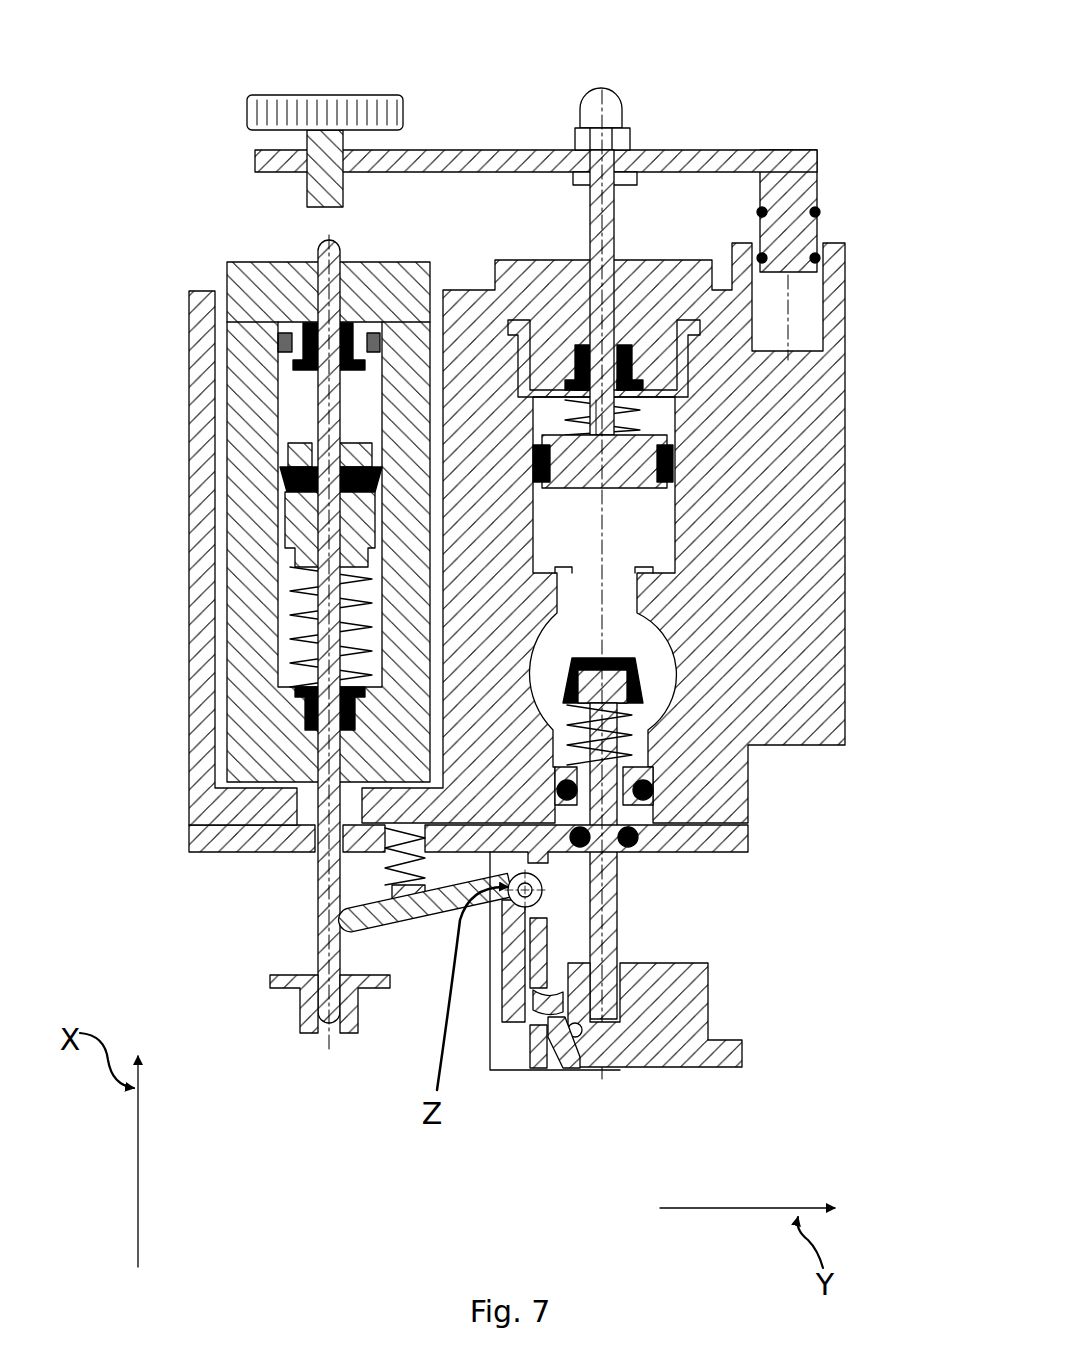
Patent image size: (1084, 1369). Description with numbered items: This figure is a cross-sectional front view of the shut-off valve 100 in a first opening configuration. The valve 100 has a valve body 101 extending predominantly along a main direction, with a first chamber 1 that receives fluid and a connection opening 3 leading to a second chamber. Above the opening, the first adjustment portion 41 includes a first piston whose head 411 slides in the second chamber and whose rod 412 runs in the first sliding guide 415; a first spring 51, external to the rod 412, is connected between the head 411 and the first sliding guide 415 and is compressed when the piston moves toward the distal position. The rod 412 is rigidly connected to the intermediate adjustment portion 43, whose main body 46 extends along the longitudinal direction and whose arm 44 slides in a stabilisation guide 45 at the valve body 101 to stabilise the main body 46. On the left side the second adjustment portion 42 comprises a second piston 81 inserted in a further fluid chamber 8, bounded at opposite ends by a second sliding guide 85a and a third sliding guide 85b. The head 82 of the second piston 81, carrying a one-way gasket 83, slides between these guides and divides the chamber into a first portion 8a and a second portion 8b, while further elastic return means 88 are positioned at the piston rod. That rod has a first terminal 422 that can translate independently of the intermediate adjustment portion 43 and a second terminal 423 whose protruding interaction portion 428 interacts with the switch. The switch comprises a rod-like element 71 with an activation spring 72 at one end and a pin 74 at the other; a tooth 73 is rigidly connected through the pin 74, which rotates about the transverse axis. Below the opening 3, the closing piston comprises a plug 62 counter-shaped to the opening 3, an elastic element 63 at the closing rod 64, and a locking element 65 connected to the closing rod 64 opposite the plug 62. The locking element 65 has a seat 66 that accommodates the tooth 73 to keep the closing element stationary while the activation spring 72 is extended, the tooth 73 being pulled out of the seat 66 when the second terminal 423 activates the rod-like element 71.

The shut-off valve 100 is at (180, 68).
The main body 46 is at (470, 158).
The intermediate adjustment portion 43 is at (657, 122).
The first terminal 422 is at (318, 243).
The second sliding guide 85a is at (310, 288).
The first sliding guide 415 is at (590, 245).
The arm 44 is at (800, 160).
The first portion of further fluid chamber 8a is at (300, 376).
The further fluid chamber 8 is at (300, 410).
The one-way gasket 83 is at (300, 470).
The second piston 81 is at (272, 500).
The head 82 is at (300, 545).
The further elastic return means 88 is at (300, 592).
The second portion of further fluid chamber 8b is at (300, 650).
The third sliding guide 85b is at (300, 752).
The second adjustment portion 42 is at (186, 737).
The second terminal 423 is at (320, 945).
The interaction portion 428 is at (280, 985).
The stabilisation guide 45 is at (805, 298).
The rod 412 is at (640, 410).
The first spring 51 is at (675, 462).
The first adjustment portion 41 is at (680, 477).
The connection opening 3 is at (620, 572).
The valve body 101 is at (652, 658).
The first chamber 1 is at (800, 660).
The plug 62 is at (735, 700).
The elastic element 63 is at (700, 823).
The closing rod 64 is at (605, 895).
The locking element 65 is at (690, 1000).
The seat 66 is at (557, 1037).
The pin 74 is at (515, 907).
The tooth 73 is at (552, 988).
The activation spring 72 is at (395, 878).
The rod-like element 71 is at (405, 912).
The head 411 is at (593, 452).